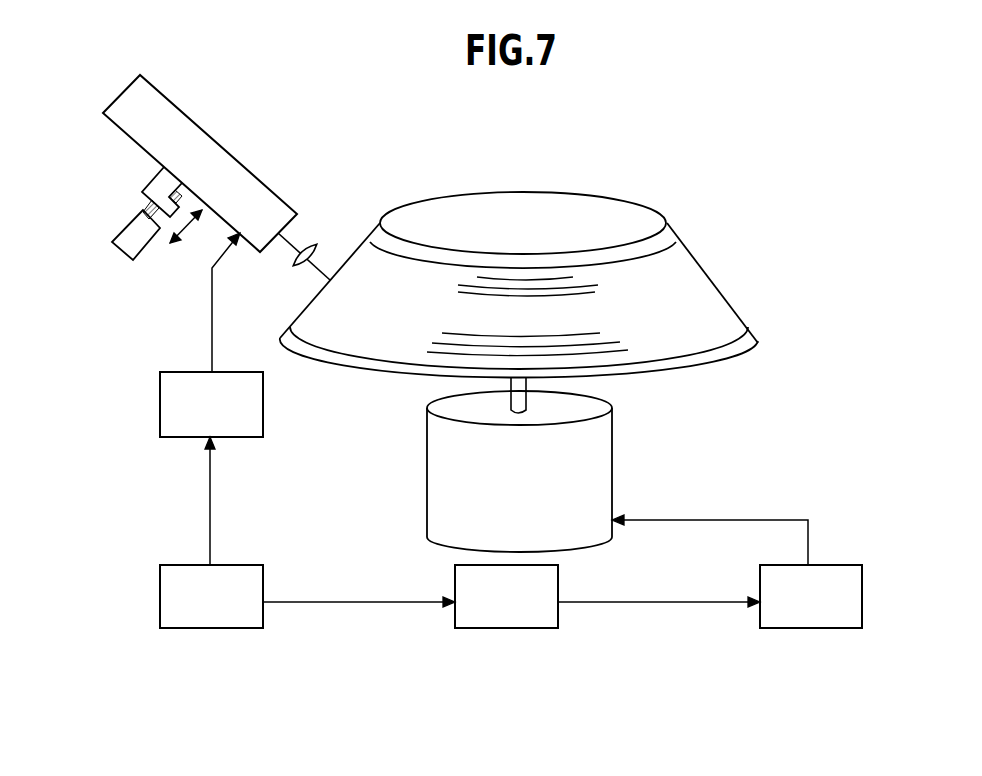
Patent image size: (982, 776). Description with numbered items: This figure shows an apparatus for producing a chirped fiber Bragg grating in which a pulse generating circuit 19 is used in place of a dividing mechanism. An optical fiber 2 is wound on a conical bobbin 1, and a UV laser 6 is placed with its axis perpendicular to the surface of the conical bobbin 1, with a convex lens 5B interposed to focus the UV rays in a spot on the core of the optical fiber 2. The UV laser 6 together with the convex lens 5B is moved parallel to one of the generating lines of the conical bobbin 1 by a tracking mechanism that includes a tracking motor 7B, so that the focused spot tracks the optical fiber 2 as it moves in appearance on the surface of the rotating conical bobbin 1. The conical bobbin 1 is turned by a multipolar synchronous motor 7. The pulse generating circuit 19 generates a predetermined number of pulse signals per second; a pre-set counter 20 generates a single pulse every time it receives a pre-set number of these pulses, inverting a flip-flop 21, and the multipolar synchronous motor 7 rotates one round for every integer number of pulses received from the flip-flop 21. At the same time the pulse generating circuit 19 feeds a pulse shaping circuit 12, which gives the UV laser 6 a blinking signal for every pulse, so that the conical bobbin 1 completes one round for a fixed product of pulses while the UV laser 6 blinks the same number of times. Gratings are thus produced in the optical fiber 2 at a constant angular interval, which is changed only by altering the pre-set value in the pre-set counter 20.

The conical bobbin 1 is at (603, 193).
The optical fiber 2 is at (693, 275).
The convex lens 5B is at (310, 243).
The UV laser 6 is at (253, 170).
The multipolar synchronous motor 7 is at (612, 467).
The tracking motor 7B is at (123, 223).
The pulse shaping circuit 12 is at (211, 404).
The pulse generating circuit 19 is at (211, 596).
The pre-set counter 20 is at (506, 596).
The flip-flop 21 is at (811, 596).